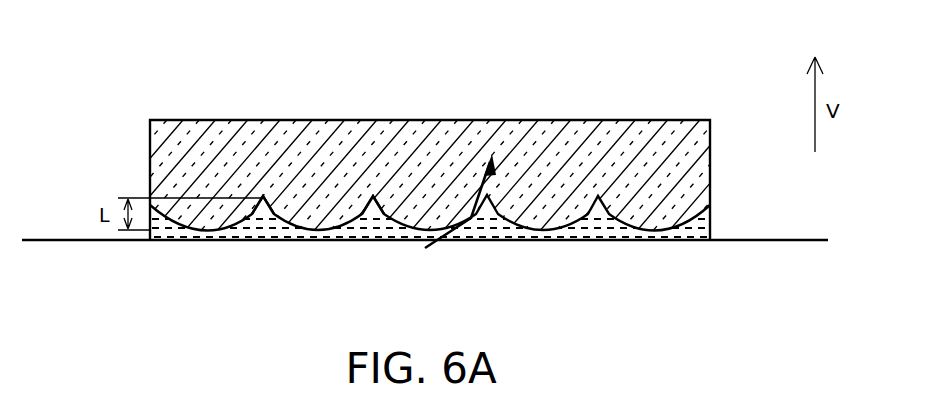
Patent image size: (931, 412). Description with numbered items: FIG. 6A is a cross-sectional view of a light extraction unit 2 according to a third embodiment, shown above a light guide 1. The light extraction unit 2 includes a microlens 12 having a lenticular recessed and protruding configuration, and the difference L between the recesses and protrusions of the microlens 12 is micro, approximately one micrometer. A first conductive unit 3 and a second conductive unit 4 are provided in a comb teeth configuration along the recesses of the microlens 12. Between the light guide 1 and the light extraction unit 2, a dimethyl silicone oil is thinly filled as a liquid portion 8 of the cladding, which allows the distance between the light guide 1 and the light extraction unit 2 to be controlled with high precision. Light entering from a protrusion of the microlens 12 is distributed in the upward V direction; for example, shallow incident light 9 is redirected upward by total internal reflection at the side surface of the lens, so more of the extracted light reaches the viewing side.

The light guide 1 is at (63, 263).
The light extraction unit 2 is at (648, 163).
The first conductive unit 3 is at (263, 197).
The second conductive unit 4 is at (392, 200).
The liquid portion 8 is at (705, 231).
The shallow incident light 9 is at (495, 184).
The microlens 12 is at (540, 229).